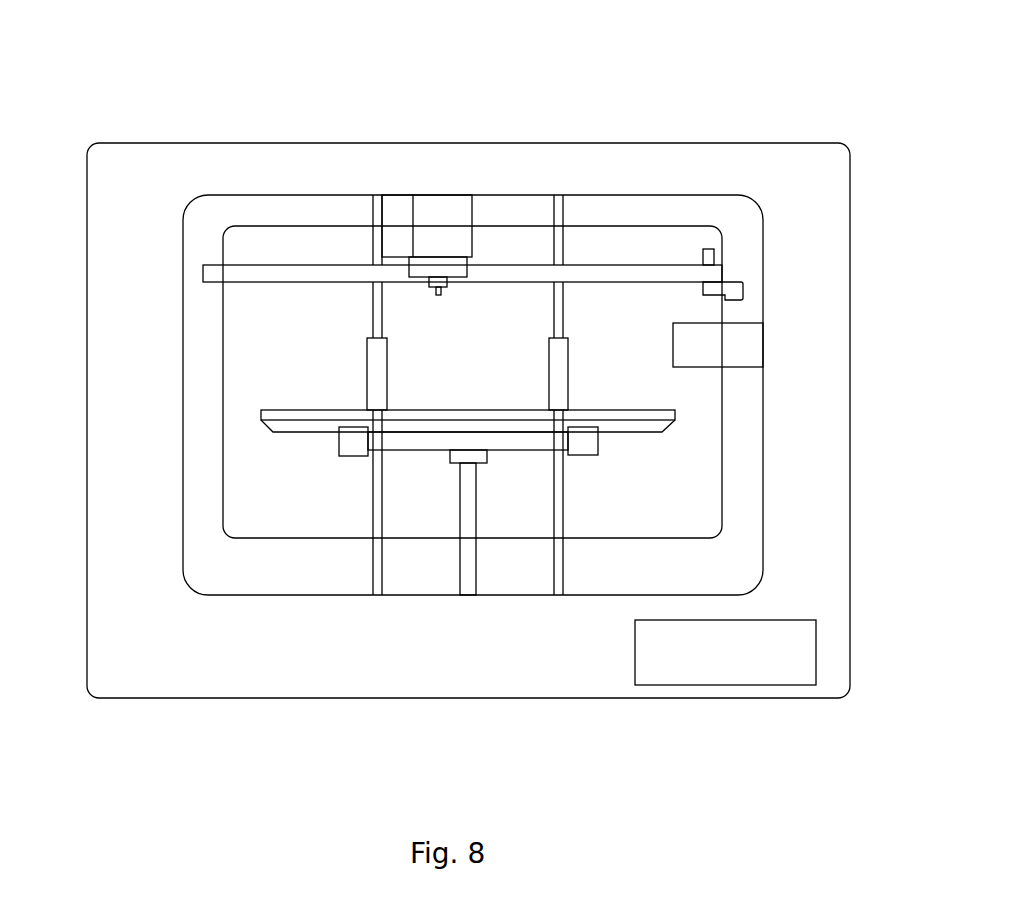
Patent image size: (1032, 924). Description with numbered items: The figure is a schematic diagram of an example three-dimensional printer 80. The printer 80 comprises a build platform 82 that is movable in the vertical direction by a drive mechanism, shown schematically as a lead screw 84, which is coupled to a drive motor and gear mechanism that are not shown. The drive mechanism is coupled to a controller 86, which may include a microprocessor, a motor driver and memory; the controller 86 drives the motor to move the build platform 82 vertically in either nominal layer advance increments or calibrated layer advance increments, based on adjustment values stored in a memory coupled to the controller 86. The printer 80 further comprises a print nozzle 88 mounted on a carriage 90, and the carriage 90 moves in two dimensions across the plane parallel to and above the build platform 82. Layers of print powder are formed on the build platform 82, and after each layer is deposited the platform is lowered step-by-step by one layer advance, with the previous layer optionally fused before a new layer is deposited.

The three-dimensional (3D) printer 80 is at (155, 74).
The build platform 82 is at (310, 415).
The lead screw 84 is at (468, 567).
The controller 86 is at (807, 655).
The print nozzle 88 is at (435, 275).
The carriage 90 is at (430, 213).